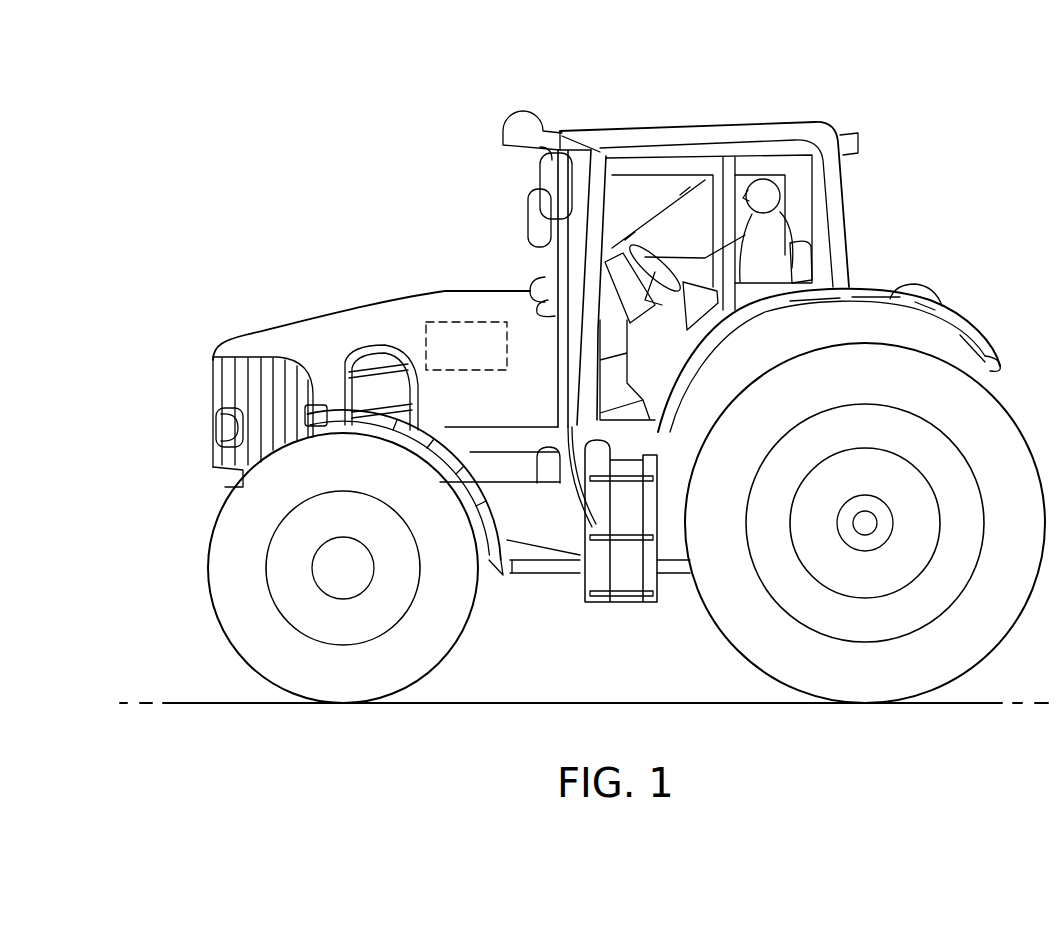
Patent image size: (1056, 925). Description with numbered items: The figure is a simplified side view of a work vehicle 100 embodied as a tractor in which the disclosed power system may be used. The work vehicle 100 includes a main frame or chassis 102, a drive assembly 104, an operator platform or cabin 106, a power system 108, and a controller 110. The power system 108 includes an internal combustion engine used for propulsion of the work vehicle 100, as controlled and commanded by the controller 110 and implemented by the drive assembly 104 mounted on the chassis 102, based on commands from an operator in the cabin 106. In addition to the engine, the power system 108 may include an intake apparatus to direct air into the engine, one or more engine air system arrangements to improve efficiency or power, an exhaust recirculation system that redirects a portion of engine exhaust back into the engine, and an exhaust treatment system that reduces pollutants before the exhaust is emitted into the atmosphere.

The work vehicle 100 is at (866, 98).
The chassis 102 is at (487, 563).
The drive assembly 104 is at (325, 571).
The cabin 106 is at (652, 139).
The power system 108 is at (330, 323).
The controller 110 is at (466, 322).